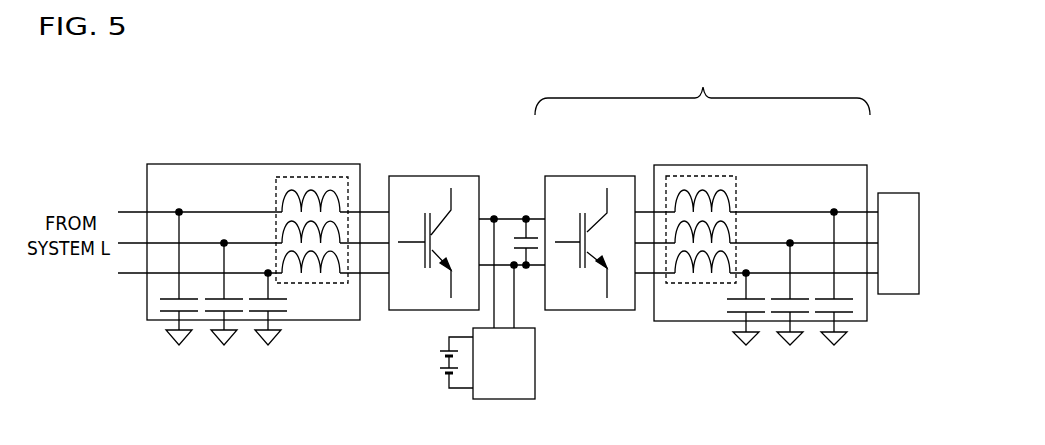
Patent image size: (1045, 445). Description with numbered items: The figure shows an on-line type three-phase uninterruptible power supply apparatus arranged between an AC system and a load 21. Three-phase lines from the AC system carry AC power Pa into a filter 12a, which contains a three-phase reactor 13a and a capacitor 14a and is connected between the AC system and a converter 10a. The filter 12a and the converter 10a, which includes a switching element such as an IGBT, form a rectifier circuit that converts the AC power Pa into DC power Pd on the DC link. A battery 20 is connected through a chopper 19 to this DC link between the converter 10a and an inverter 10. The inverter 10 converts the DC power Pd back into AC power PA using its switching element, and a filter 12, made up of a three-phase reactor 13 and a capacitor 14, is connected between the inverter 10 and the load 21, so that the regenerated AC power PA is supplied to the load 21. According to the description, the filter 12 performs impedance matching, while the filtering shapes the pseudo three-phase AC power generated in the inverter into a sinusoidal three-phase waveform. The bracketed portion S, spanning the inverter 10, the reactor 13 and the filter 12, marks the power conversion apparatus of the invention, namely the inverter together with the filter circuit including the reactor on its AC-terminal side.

The inverter 10 is at (590, 180).
The converter 10a is at (436, 180).
The filter 12 is at (802, 170).
The filter 12a is at (214, 170).
The three-phase reactor 13 is at (698, 180).
The three-phase reactor 13a is at (316, 180).
The capacitor 14 is at (825, 313).
The capacitor 14a is at (280, 313).
The chopper 19 is at (530, 365).
The battery 20 is at (448, 380).
The load 21 is at (900, 192).
The AC power Pa is at (125, 275).
The AC power PA is at (645, 275).
The DC power Pd is at (508, 217).
The portion S is at (702, 88).